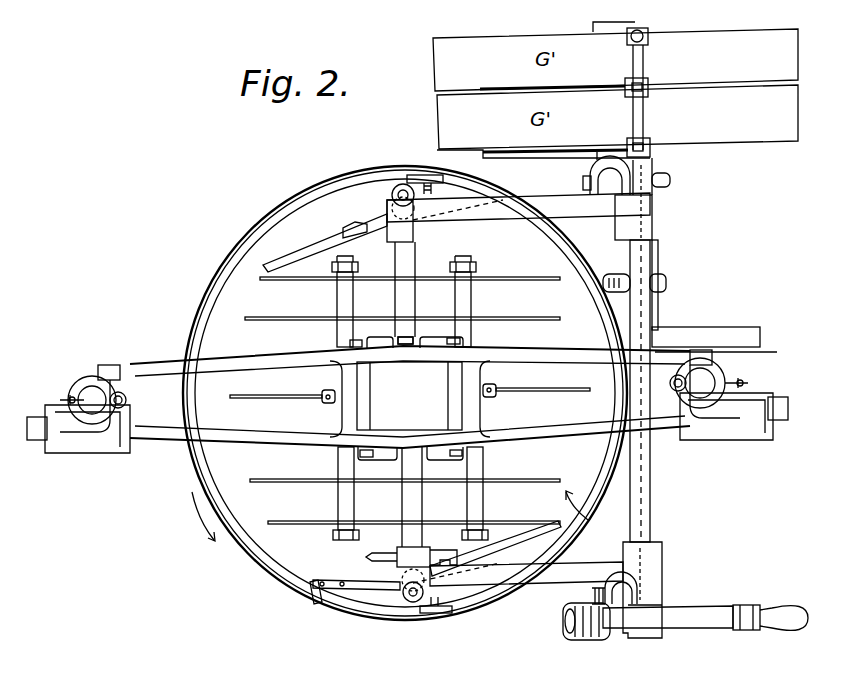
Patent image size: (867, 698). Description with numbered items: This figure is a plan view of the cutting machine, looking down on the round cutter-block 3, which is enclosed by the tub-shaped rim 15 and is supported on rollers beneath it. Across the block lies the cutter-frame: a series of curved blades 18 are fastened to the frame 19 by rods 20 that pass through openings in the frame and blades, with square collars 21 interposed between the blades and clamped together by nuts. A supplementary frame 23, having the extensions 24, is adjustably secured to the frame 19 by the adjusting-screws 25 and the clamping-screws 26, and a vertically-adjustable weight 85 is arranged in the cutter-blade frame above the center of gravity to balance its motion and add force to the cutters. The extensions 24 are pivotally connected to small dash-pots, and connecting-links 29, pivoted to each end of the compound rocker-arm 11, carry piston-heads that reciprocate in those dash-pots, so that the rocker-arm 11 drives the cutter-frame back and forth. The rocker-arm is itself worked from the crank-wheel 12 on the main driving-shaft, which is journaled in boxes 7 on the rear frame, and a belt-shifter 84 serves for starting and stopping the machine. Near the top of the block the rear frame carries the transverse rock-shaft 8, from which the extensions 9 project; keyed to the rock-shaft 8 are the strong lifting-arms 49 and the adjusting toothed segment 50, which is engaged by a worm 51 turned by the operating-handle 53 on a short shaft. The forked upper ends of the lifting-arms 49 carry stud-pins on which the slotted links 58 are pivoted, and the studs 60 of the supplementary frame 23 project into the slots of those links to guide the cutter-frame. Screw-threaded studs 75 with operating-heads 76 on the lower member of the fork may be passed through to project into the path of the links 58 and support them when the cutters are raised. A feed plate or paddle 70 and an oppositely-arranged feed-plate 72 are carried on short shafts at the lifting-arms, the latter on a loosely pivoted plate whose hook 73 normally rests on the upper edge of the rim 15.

The cutter-block 3 is at (227, 338).
The boxes 7 is at (670, 180).
The transverse rock-shaft 8 is at (650, 312).
The extensions 9 is at (600, 178).
The compound rocker-arm 11 is at (36, 440).
The crank-wheel 12 is at (737, 330).
The rim 15 is at (303, 200).
The curved blades 18 is at (265, 282).
The frame 19 is at (365, 373).
The rods 20 is at (346, 267).
The square collars 21 is at (353, 300).
The supplementary frame 23 is at (416, 353).
The extensions 24 is at (203, 430).
The adjusting-screws 25 is at (320, 394).
The clamping-screws 26 is at (462, 341).
The connecting-links 29 is at (78, 453).
The lifting-arms 49 is at (518, 389).
The adjusting toothed segment 50 is at (676, 608).
The worm 51 is at (590, 638).
The operating-handle 53 is at (775, 607).
The links 58 is at (413, 232).
The studs 60 is at (412, 266).
The feed plate or paddle 70 is at (348, 238).
The feed-plate 72 is at (362, 580).
The hook 73 is at (312, 596).
The screw-threaded studs 75 is at (416, 197).
The operating-heads 76 is at (417, 176).
The belt-shifter 84 is at (640, 58).
The vertically-adjustable weight 85 is at (409, 396).